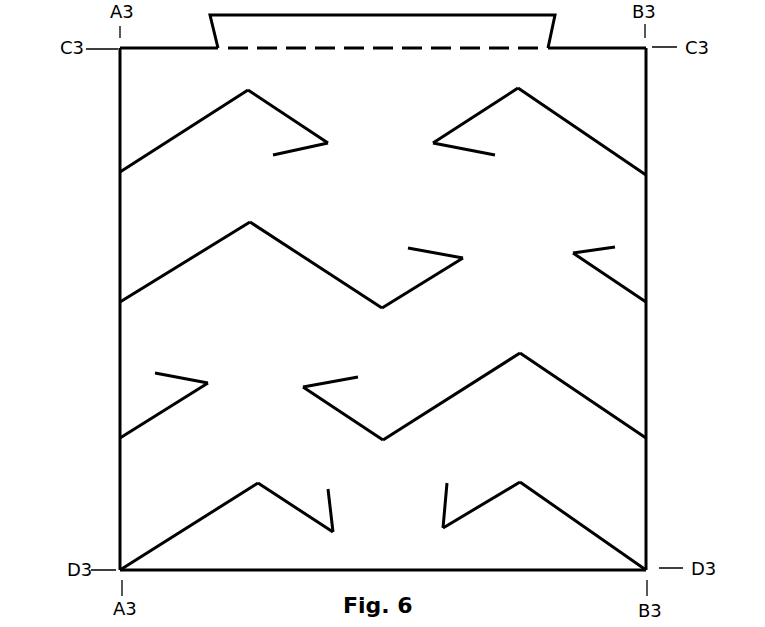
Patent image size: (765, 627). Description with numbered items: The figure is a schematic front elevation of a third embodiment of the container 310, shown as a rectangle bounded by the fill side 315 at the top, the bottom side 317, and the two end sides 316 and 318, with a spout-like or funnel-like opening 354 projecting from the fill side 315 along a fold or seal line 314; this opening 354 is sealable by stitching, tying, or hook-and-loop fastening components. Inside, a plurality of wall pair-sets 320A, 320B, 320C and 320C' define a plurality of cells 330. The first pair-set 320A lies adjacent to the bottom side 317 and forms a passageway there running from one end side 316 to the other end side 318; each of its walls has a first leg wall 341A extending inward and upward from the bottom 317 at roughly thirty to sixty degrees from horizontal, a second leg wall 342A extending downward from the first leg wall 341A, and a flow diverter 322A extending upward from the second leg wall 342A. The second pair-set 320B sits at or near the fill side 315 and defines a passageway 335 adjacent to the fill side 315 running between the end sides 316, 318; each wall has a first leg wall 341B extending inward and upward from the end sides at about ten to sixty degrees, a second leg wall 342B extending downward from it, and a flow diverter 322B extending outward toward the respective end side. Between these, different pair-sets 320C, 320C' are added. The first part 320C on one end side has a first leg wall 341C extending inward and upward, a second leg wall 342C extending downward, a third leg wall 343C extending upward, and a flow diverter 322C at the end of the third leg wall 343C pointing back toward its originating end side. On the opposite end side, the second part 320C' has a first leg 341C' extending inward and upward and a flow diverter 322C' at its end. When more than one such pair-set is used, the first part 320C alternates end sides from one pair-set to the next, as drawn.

The container 310 is at (100, 140).
The fold line (dashed) 314 is at (358, 49).
The fill side 315 is at (566, 48).
The end side 316 is at (95, 309).
The bottom side 317 is at (503, 572).
The end side 318 is at (648, 260).
The passageway 335 is at (156, 75).
The funnel-like opening 354 is at (382, 31).
The cells 330 is at (378, 354).
The first pair-set 320A is at (222, 505).
The second pair-set 320B is at (327, 100).
The first part of different pair-set 320C is at (383, 323).
The second part of different pair-set 320C' is at (383, 329).
The flow diverter 322A is at (333, 494).
The flow diverter 322B is at (290, 156).
The flow diverter 322C is at (390, 305).
The flow diverter 322C' is at (385, 309).
The first leg wall 341A is at (233, 543).
The first leg wall 341B is at (178, 136).
The first leg wall 341C is at (383, 330).
The first leg wall 341C' is at (383, 351).
The second leg wall 342A is at (318, 522).
The second leg wall 342B is at (293, 120).
The second leg wall 342C is at (283, 244).
The third leg wall 343C is at (403, 295).